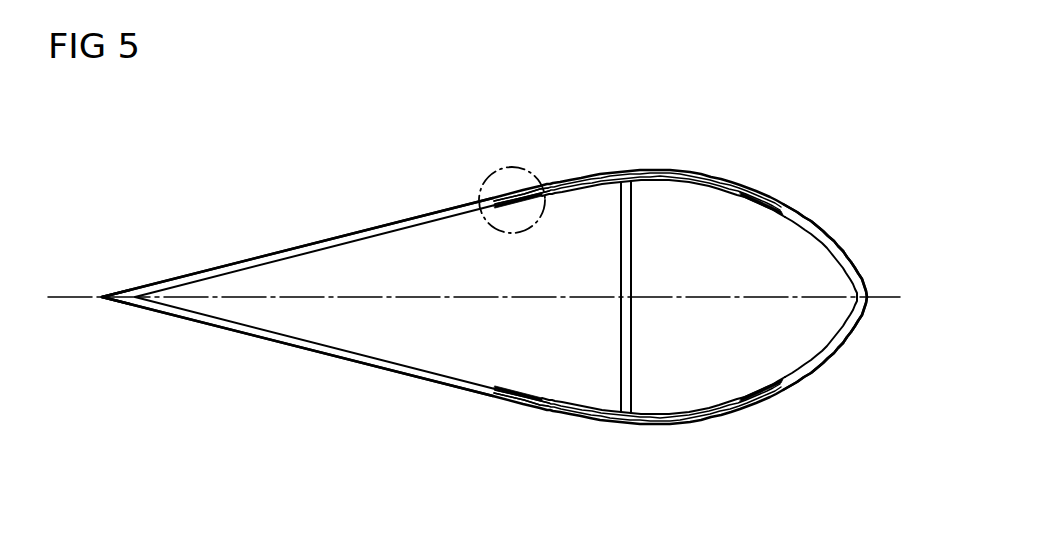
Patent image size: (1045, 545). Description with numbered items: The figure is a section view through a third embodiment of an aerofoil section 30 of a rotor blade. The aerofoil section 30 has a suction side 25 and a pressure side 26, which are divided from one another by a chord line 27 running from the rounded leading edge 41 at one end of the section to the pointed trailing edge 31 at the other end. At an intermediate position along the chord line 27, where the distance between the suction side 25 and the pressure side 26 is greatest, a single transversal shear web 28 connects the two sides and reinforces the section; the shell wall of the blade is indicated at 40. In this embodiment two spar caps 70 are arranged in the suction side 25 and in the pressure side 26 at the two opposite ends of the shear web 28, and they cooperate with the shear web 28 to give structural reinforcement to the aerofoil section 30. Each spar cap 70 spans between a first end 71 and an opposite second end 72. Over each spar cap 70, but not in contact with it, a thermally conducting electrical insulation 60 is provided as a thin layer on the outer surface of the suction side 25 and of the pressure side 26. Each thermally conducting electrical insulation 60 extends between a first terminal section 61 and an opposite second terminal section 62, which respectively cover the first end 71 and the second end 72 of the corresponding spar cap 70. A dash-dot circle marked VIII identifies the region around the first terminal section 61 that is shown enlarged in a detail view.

The aerofoil section 30 is at (812, 127).
The trailing edge 31 is at (98, 295).
The leading edge 41 is at (870, 296).
The suction side 25 is at (208, 269).
The pressure side 26 is at (334, 360).
The chord line 27 is at (270, 297).
The shear web 28 is at (621, 331).
The shell wall 40 is at (351, 233).
The thermally conducting electrical insulation 60 is at (728, 180).
The first terminal section 61 is at (518, 187).
The second terminal section 62 is at (775, 198).
The spar cap 70 is at (662, 186).
The first end 71 is at (514, 208).
The second end 72 is at (746, 208).
The detail VIII is at (479, 182).